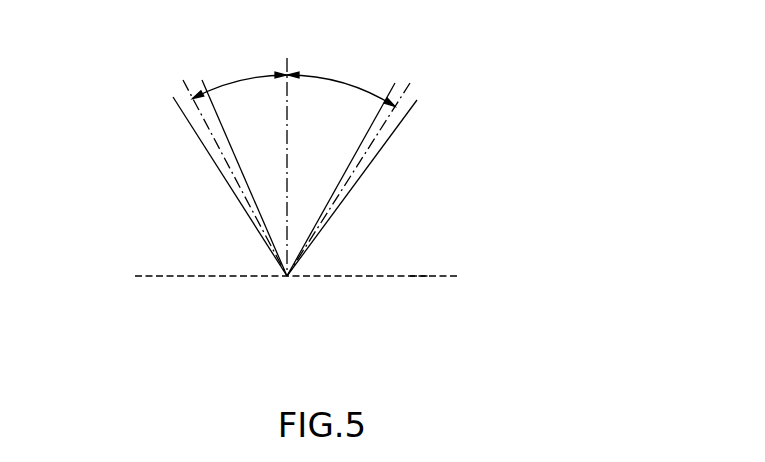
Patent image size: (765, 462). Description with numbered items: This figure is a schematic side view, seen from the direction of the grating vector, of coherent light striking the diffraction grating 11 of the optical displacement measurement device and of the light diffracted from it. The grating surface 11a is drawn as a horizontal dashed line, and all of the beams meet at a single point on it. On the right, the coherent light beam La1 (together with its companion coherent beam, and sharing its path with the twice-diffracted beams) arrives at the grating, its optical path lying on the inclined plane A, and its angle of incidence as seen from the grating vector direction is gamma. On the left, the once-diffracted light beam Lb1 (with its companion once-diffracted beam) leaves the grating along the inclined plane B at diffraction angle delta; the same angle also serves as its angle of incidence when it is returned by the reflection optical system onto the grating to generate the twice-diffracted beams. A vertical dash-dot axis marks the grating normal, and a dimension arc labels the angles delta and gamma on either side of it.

The diffraction grating 11 is at (375, 278).
The surface of workpiece 11a is at (418, 275).
The coherent light beam La1 is at (403, 118).
The once-diffracted light beam Lb1 is at (207, 150).